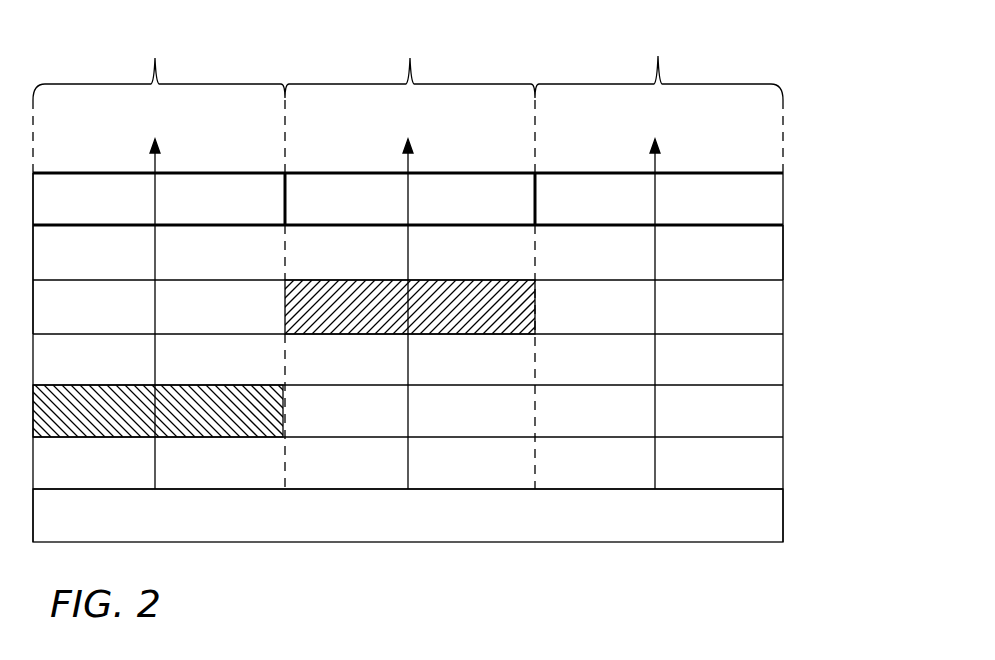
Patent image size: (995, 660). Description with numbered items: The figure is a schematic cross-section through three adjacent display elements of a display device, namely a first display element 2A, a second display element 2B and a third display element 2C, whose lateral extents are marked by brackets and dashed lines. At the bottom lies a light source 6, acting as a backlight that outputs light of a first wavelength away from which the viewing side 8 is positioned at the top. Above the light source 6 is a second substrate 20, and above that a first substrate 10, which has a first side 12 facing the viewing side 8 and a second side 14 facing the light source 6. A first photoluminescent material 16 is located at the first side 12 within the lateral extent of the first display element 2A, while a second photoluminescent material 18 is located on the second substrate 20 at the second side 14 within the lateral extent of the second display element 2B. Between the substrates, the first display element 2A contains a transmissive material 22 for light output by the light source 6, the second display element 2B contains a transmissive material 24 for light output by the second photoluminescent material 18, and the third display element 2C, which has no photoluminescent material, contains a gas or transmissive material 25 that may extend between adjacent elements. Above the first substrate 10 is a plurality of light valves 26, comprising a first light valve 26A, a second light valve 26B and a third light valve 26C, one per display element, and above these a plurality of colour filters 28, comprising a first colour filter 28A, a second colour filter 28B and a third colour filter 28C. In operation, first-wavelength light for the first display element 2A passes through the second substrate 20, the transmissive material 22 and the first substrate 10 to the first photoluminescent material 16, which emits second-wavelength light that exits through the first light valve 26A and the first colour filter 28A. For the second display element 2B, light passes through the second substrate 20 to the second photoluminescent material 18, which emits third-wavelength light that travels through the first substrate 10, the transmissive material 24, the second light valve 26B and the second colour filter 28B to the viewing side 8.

The first display element 2A is at (432, 249).
The second display element 2B is at (181, 250).
The third display element 2C is at (680, 249).
The light source 6 is at (783, 515).
The viewing side 8 is at (700, 138).
The first substrate 10 is at (783, 360).
The first side 12 is at (748, 334).
The second side 14 is at (752, 388).
The first photoluminescent material 16 is at (535, 313).
The second photoluminescent material 18 is at (285, 418).
The second substrate 20 is at (783, 460).
The transmissive material 22 is at (473, 426).
The transmissive material 24 is at (109, 321).
The transmissive material 25 is at (724, 315).
The light valves 26 is at (783, 255).
The first light valve 26A is at (371, 266).
The second light valve 26B is at (121, 266).
The third light valve 26C is at (618, 266).
The colour filters 28 is at (783, 200).
The first colour filter 28A is at (372, 212).
The second colour filter 28B is at (123, 212).
The third colour filter 28C is at (620, 212).